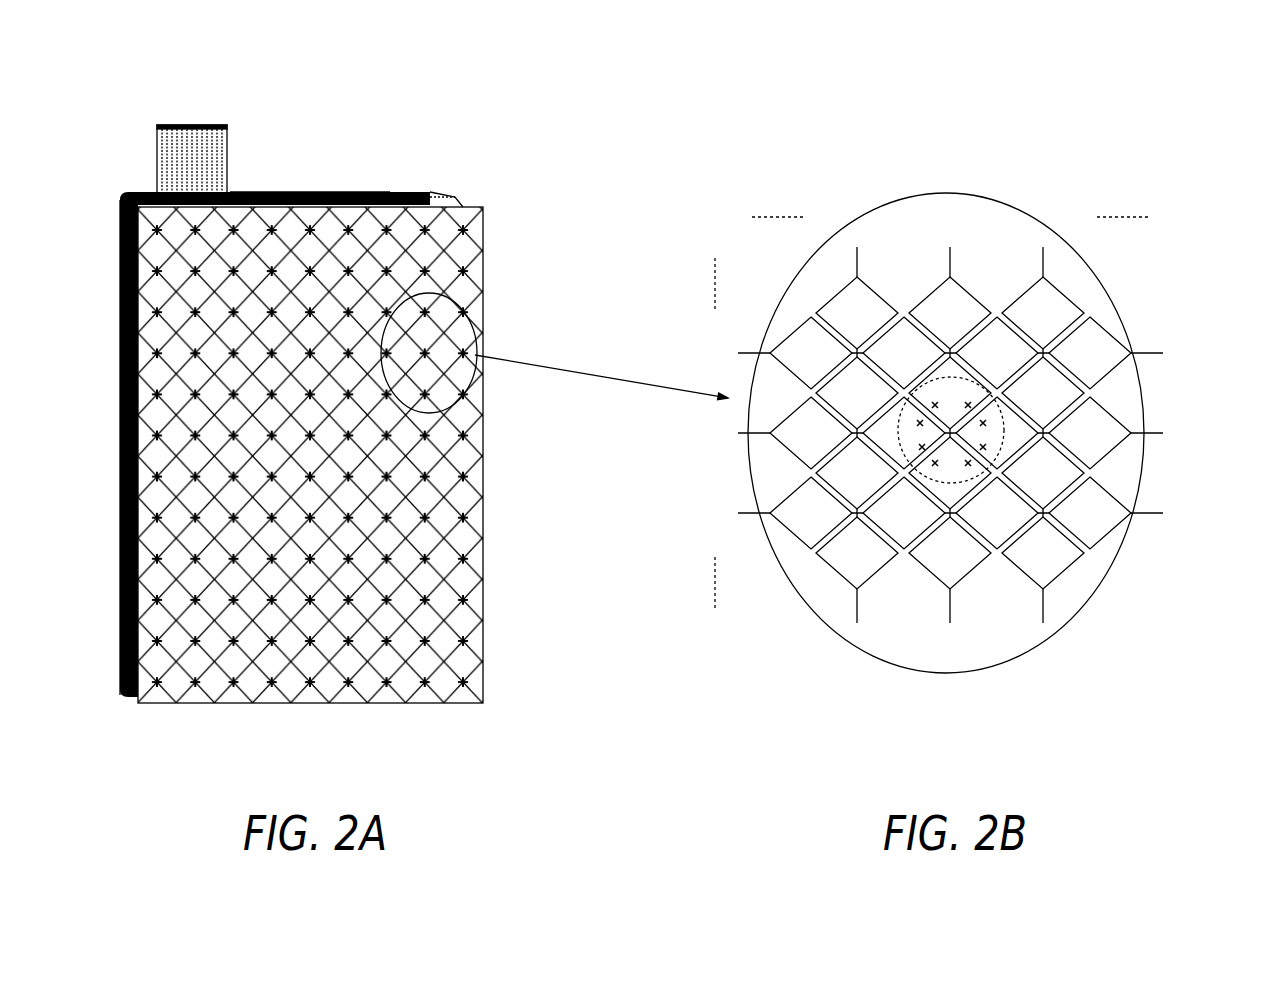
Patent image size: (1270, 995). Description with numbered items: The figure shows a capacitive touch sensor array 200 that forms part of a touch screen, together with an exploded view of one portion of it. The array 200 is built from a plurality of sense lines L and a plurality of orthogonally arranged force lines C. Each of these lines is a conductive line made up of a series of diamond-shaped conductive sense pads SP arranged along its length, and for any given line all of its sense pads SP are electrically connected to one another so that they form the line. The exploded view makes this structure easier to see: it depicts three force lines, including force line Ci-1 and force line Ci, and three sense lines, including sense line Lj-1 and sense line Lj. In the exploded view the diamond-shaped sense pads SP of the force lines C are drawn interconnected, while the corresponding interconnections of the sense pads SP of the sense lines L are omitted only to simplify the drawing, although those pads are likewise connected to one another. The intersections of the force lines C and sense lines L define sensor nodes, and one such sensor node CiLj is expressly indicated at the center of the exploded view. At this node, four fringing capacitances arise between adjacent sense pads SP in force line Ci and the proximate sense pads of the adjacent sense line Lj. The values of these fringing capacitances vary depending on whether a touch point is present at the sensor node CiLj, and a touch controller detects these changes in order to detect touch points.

In FIG. 2A, the capacitive touch sensor array 200 is at (393, 377).
In FIG. 2A, the conductive sense pad SP is at (462, 247).
In FIG. 2B, the conductive sense pad SP is at (1058, 305).
In FIG. 2A, the force lines C is at (390, 187).
In FIG. 2A, the sense lines L is at (97, 198).
In FIG. 2B, the force line Ci-1 is at (856, 418).
In FIG. 2B, the force line Ci is at (943, 418).
In FIG. 2B, the sense line Lj-1 is at (914, 361).
In FIG. 2B, the sense line Lj is at (914, 442).
In FIG. 2B, the sensor node CiLj is at (1008, 428).